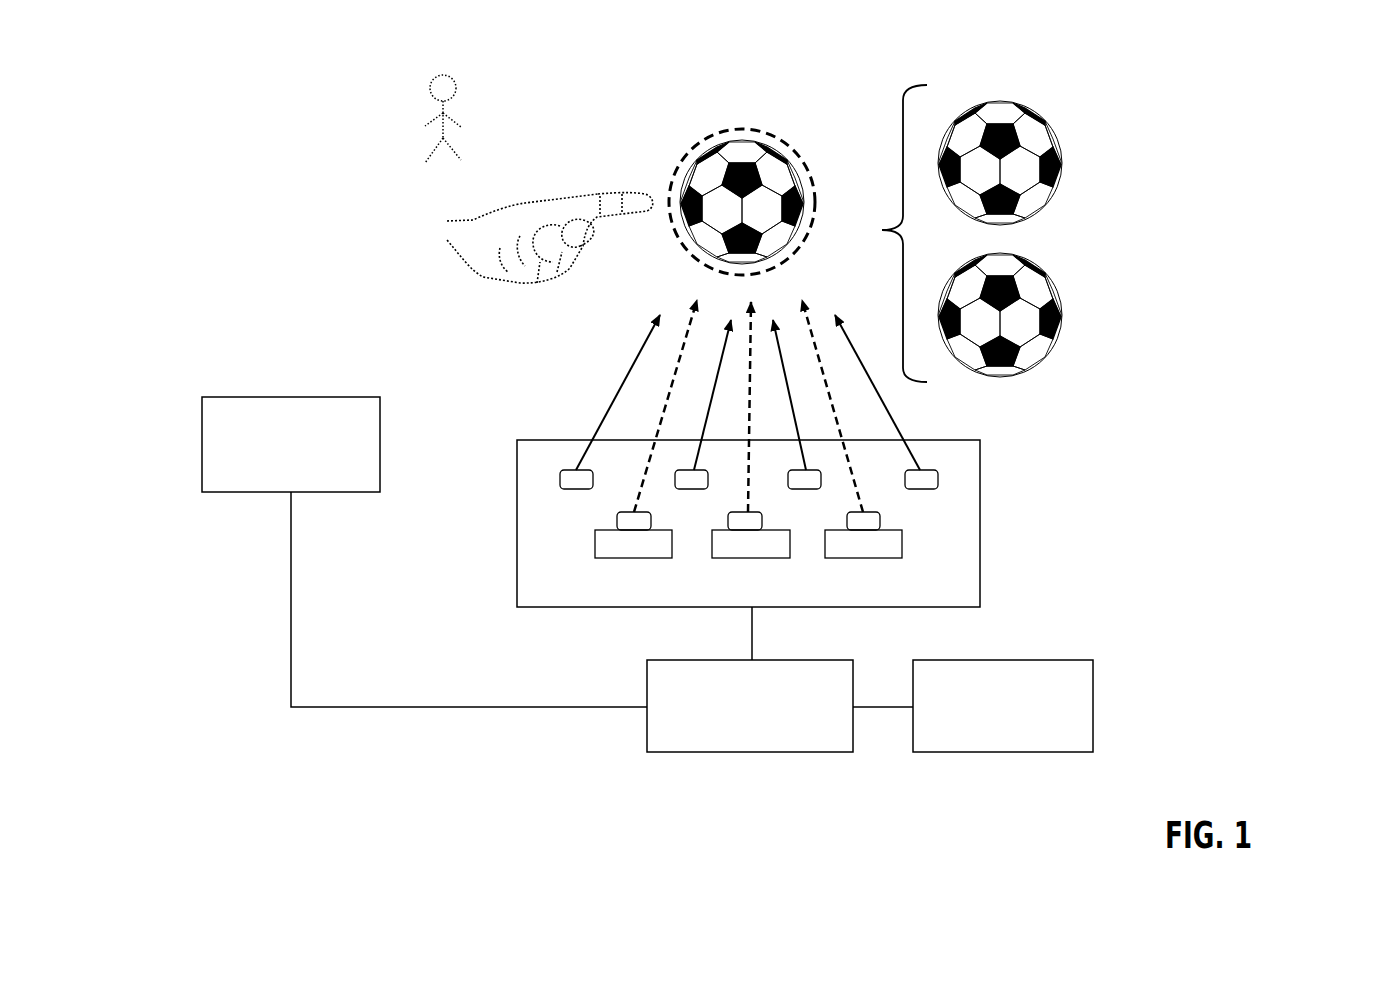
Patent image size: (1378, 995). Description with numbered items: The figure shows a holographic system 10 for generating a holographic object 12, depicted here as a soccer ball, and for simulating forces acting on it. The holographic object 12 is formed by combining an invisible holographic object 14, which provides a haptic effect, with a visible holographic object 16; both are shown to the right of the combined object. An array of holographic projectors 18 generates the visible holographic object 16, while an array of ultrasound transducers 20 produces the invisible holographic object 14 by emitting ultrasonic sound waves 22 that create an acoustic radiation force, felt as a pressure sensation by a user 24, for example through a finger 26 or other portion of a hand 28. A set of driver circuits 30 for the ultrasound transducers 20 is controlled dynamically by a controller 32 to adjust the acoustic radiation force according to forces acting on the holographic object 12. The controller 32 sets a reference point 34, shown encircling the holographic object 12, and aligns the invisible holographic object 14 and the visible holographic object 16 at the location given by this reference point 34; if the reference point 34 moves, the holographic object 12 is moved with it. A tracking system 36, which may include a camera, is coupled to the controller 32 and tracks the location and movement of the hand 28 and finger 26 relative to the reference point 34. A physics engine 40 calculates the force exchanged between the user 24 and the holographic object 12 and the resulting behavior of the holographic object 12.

The holographic system 10 is at (1258, 275).
The holographic object 12 is at (705, 158).
The invisible holographic object 14 is at (1048, 120).
The visible holographic object 16 is at (1053, 283).
The holographic projectors 18 is at (556, 478).
The ultrasound transducers 20 is at (592, 520).
The ultrasonic sound waves 22 is at (748, 387).
The user 24 is at (438, 118).
The finger 26 is at (537, 288).
The hand 28 is at (603, 195).
The driver circuits 30 is at (912, 548).
The controller 32 is at (780, 679).
The reference point 34 is at (766, 131).
The tracking system 36 is at (424, 552).
The physics engine 40 is at (1003, 706).